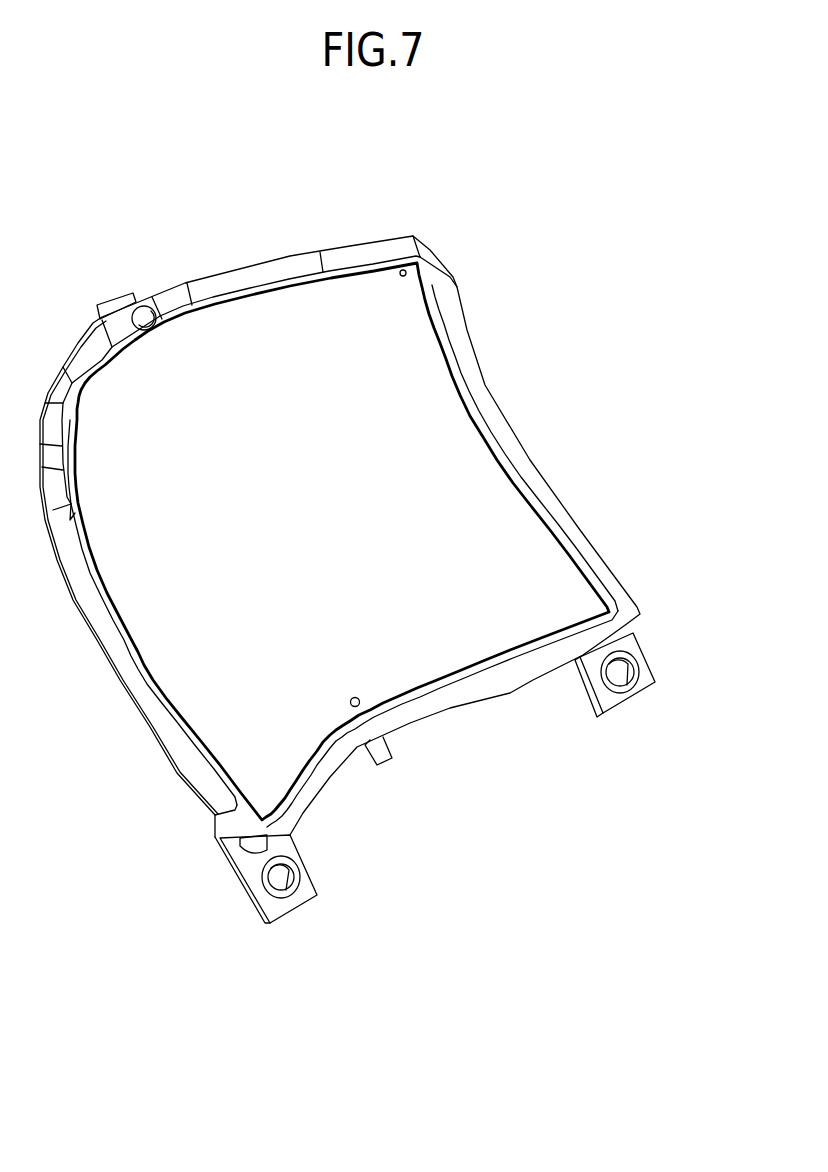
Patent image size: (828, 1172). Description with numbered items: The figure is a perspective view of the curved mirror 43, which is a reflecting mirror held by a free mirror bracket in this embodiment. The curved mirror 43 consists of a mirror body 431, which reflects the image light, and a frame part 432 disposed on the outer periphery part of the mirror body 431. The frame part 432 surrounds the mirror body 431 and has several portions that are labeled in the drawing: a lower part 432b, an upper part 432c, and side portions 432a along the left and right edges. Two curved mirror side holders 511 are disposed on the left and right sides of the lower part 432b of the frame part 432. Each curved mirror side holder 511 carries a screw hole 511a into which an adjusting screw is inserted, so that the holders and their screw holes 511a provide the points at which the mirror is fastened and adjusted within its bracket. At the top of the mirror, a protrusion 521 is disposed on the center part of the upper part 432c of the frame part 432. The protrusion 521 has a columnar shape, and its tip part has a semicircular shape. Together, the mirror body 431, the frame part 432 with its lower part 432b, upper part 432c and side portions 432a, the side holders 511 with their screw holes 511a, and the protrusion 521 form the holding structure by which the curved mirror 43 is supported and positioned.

The curved mirror 43 is at (648, 352).
The mirror body 431 is at (428, 517).
The frame part 432 is at (381, 510).
The side portion of frame 432a is at (587, 560).
The lower part 432b is at (473, 680).
The upper part 432c is at (247, 282).
The curved mirror side holder 511 is at (655, 667).
The screw hole 511a is at (621, 686).
The protrusion 521 is at (147, 310).